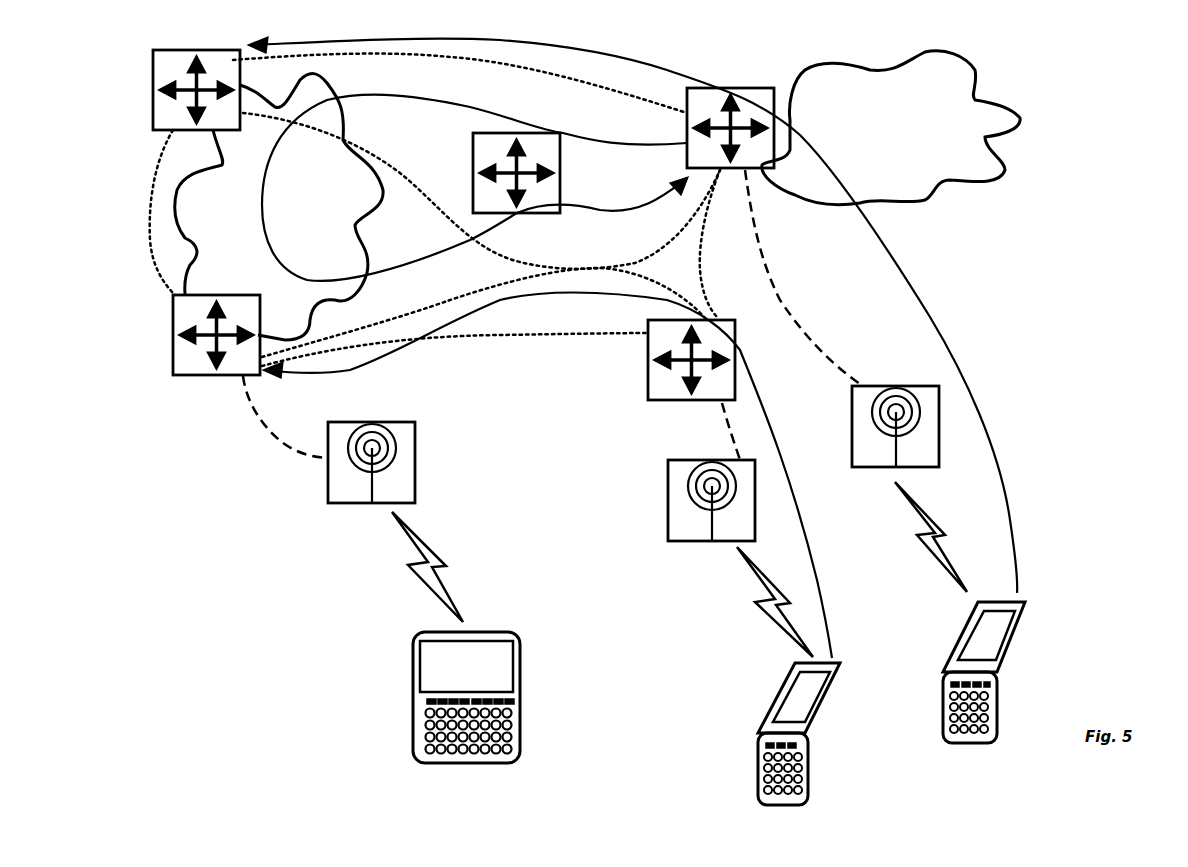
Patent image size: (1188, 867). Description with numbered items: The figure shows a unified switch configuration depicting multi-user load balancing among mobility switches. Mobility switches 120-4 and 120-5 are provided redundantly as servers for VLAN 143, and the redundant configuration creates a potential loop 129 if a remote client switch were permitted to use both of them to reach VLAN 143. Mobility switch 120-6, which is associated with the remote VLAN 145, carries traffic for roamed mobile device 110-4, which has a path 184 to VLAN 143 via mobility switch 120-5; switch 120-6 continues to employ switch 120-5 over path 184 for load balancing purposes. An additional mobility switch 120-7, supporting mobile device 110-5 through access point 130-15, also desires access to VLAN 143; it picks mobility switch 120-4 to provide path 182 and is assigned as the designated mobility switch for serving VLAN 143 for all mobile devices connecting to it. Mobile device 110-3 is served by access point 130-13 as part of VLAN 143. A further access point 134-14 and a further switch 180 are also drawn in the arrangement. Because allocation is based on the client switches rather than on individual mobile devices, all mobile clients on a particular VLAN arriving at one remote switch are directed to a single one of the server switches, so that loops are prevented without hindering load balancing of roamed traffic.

The mobility switch 120-4 is at (173, 355).
The mobility switch 120-5 is at (153, 72).
The mobility switch 120-6 is at (740, 88).
The mobility switch 120-7 is at (648, 340).
The switch 180 is at (473, 190).
The potential loop 129 is at (268, 205).
The VLAN 143 is at (246, 273).
The remote VLAN 145 is at (914, 153).
The access point 130-13 is at (328, 487).
The access point 130-15 is at (668, 500).
The access point 134-14 is at (900, 386).
The mobile device 110-3 is at (413, 728).
The mobile device 110-4 is at (943, 722).
The mobile device 110-5 is at (758, 768).
The path 182 is at (797, 497).
The path 184 is at (930, 317).